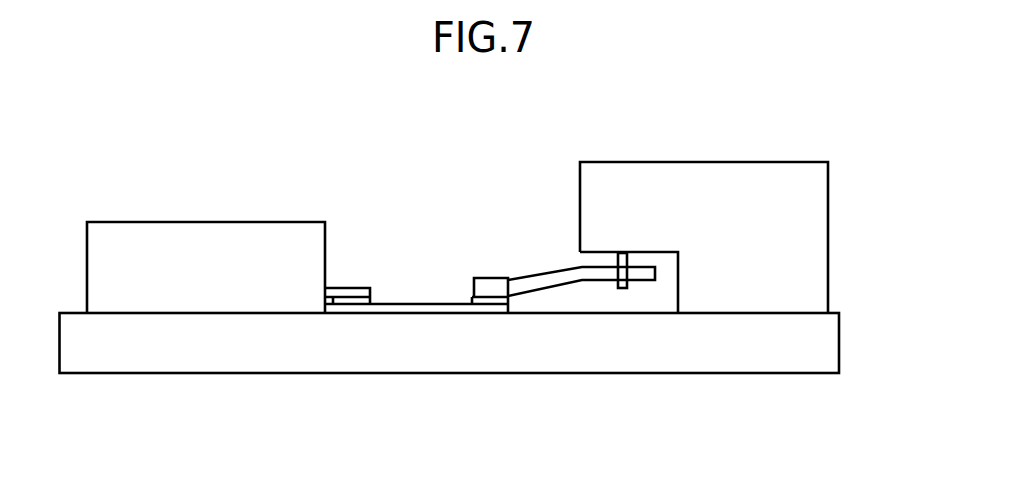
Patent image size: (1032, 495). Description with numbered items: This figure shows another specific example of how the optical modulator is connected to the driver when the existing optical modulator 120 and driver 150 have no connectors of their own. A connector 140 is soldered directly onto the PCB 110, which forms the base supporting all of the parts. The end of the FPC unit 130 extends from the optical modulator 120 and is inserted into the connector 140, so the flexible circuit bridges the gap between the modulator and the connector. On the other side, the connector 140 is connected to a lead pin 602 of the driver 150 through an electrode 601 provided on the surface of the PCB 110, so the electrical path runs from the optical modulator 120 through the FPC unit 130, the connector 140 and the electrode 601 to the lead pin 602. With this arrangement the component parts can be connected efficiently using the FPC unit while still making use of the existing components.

The Printed Circuits Board (PCB) 110 is at (839, 345).
The optical modulator 120 is at (750, 162).
The Flexible Printed Circuits (FPC) unit 130 is at (545, 272).
The connector 140 is at (493, 278).
The driver 150 is at (248, 222).
The electrode 601 is at (420, 304).
The lead pin 602 is at (357, 288).